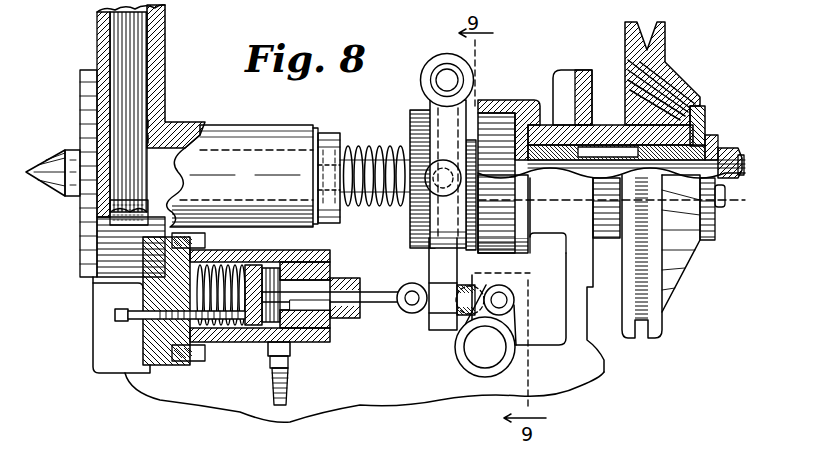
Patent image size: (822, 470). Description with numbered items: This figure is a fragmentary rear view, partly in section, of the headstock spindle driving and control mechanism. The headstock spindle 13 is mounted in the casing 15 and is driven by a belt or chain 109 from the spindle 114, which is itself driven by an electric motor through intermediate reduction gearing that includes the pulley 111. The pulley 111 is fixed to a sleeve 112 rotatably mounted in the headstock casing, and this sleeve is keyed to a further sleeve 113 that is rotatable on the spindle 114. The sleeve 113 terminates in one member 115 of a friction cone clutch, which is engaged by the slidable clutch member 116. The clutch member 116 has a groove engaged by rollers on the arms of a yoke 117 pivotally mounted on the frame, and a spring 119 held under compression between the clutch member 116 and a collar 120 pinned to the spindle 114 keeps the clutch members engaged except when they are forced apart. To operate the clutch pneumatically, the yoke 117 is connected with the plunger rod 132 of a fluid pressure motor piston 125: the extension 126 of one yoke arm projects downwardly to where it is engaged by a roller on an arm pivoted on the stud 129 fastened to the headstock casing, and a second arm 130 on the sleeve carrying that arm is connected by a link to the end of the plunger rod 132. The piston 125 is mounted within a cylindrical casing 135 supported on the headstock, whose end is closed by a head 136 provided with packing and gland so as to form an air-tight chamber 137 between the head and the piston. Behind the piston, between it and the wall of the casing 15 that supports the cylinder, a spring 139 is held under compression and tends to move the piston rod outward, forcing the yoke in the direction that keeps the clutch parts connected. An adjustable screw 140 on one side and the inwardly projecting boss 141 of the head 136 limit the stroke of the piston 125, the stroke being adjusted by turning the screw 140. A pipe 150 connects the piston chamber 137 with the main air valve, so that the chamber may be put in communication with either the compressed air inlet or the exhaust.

The headstock spindle 13 is at (44, 166).
The belt or chain 109 is at (135, 97).
The casing 15 is at (216, 134).
The collar 120 is at (333, 132).
The spindle 114 is at (362, 150).
The spring 119 is at (376, 200).
The yoke 117 is at (445, 136).
The slidable clutch member 116 is at (489, 115).
The clutch member 115 is at (512, 100).
The sleeve 113 is at (645, 155).
The pulley 111 is at (683, 83).
The sleeve 112 is at (705, 124).
The second arm 130 is at (505, 308).
The extension of yoke arm 126 is at (432, 260).
The plunger rod 132 is at (385, 304).
The stud 129 is at (481, 355).
The cylindrical casing 135 is at (247, 332).
The spring 139 is at (232, 342).
The piston 125 is at (257, 266).
The inwardly projecting boss 141 is at (290, 287).
The chamber 137 is at (290, 323).
The head 136 is at (332, 326).
The adjustable screw 140 is at (117, 320).
The pipe 150 is at (283, 390).